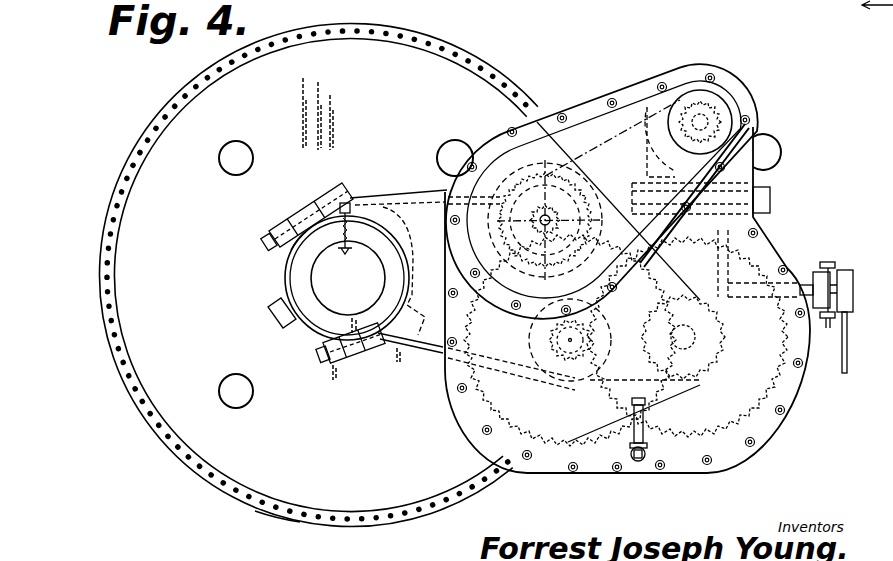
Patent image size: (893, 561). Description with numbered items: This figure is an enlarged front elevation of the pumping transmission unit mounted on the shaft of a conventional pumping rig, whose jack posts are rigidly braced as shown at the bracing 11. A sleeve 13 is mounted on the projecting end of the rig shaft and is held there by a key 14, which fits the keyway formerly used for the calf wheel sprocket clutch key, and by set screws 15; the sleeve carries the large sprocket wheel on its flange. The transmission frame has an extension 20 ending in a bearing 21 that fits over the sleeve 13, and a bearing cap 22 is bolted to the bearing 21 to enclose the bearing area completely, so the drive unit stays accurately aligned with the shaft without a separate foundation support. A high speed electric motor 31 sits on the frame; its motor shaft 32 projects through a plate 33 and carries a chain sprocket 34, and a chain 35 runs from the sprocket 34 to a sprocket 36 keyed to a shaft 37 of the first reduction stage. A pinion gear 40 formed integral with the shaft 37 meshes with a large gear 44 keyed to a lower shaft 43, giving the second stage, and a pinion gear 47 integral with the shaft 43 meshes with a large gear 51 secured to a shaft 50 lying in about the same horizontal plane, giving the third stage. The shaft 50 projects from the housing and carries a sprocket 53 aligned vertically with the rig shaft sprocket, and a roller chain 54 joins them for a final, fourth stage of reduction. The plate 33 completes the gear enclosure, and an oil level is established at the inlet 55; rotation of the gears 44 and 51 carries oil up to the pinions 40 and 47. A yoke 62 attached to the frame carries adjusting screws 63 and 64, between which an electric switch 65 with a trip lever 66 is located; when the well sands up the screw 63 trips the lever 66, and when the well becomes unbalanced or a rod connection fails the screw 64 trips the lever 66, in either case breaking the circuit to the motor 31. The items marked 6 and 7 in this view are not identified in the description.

The direction arrow 6 is at (877, 5).
The hub 7 is at (325, 283).
The bracing 11 is at (222, 470).
The sleeve 13 is at (308, 262).
The key 14 is at (350, 250).
The set screws 15 is at (352, 192).
The extension 20 is at (420, 210).
The bearing 21 is at (330, 198).
The bearing cap 22 is at (312, 330).
The electric motor 31 is at (700, 64).
The motor shaft 32 is at (728, 108).
The plate 33 is at (770, 258).
The chain sprocket 34 is at (640, 203).
The chain 35 is at (595, 146).
The sprocket 36 is at (550, 165).
The shaft 37 is at (538, 222).
The pinion gear 40 is at (560, 212).
The shaft 43 is at (550, 333).
The large gear 44 is at (450, 368).
The pinion gear 47 is at (560, 352).
The shaft 50 is at (733, 331).
The large gear 51 is at (728, 422).
The sprocket 53 is at (712, 365).
The roller chain 54 is at (277, 520).
The inlet 55 is at (630, 437).
The yoke 62 is at (821, 275).
The adjusting screw 63 is at (828, 262).
The adjusting screw 64 is at (828, 320).
The electric switch 65 is at (852, 268).
The trip lever 66 is at (846, 275).